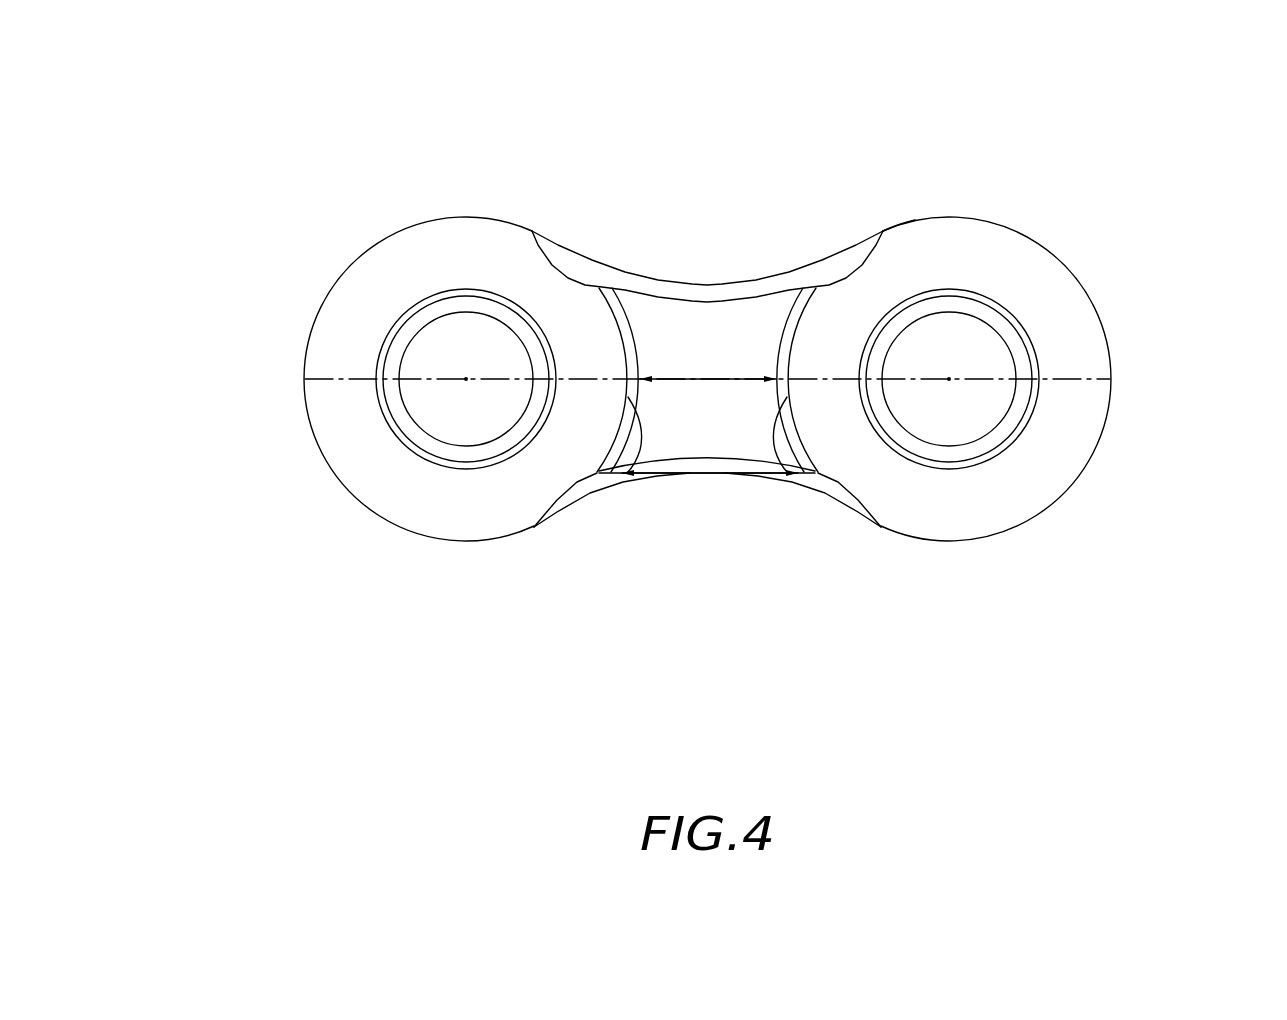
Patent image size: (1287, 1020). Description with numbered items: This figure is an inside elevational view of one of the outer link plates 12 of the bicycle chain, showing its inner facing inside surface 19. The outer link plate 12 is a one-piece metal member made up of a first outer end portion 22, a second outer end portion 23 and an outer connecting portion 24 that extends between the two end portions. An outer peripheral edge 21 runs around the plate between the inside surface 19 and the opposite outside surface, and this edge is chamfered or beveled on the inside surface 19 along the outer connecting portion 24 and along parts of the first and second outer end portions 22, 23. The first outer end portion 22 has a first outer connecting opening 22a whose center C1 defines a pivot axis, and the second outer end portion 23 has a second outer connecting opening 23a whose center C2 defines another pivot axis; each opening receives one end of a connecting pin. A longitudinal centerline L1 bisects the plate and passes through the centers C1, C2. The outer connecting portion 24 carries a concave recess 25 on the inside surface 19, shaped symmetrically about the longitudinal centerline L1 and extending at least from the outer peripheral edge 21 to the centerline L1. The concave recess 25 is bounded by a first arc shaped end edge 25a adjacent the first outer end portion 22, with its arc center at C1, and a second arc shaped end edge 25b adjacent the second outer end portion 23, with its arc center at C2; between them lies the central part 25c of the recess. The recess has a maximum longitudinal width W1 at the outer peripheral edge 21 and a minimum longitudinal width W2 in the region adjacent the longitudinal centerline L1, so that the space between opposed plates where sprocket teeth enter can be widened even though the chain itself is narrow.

The outer link plate 12 is at (747, 213).
The inside surface 19 is at (933, 253).
The outer peripheral edge 21 is at (857, 243).
The first outer end portion 22 is at (385, 493).
The first outer connecting opening 22a is at (475, 313).
The second outer end portion 23 is at (1053, 485).
The second outer connecting opening 23a is at (948, 313).
The outer connecting portion 24 is at (670, 268).
The concave recess 25 is at (680, 420).
The first arc shaped end edge 25a is at (534, 527).
The second arc shaped end edge 25b is at (881, 527).
The intermediate straight section of second peripheral edge 25c is at (735, 428).
The center of first outer connecting opening C1 is at (467, 380).
The center of second outer connecting opening C2 is at (949, 379).
The longitudinal centerline L1 is at (1067, 378).
The maximum longitudinal width W1 is at (695, 470).
The minimum longitudinal width W2 is at (720, 378).